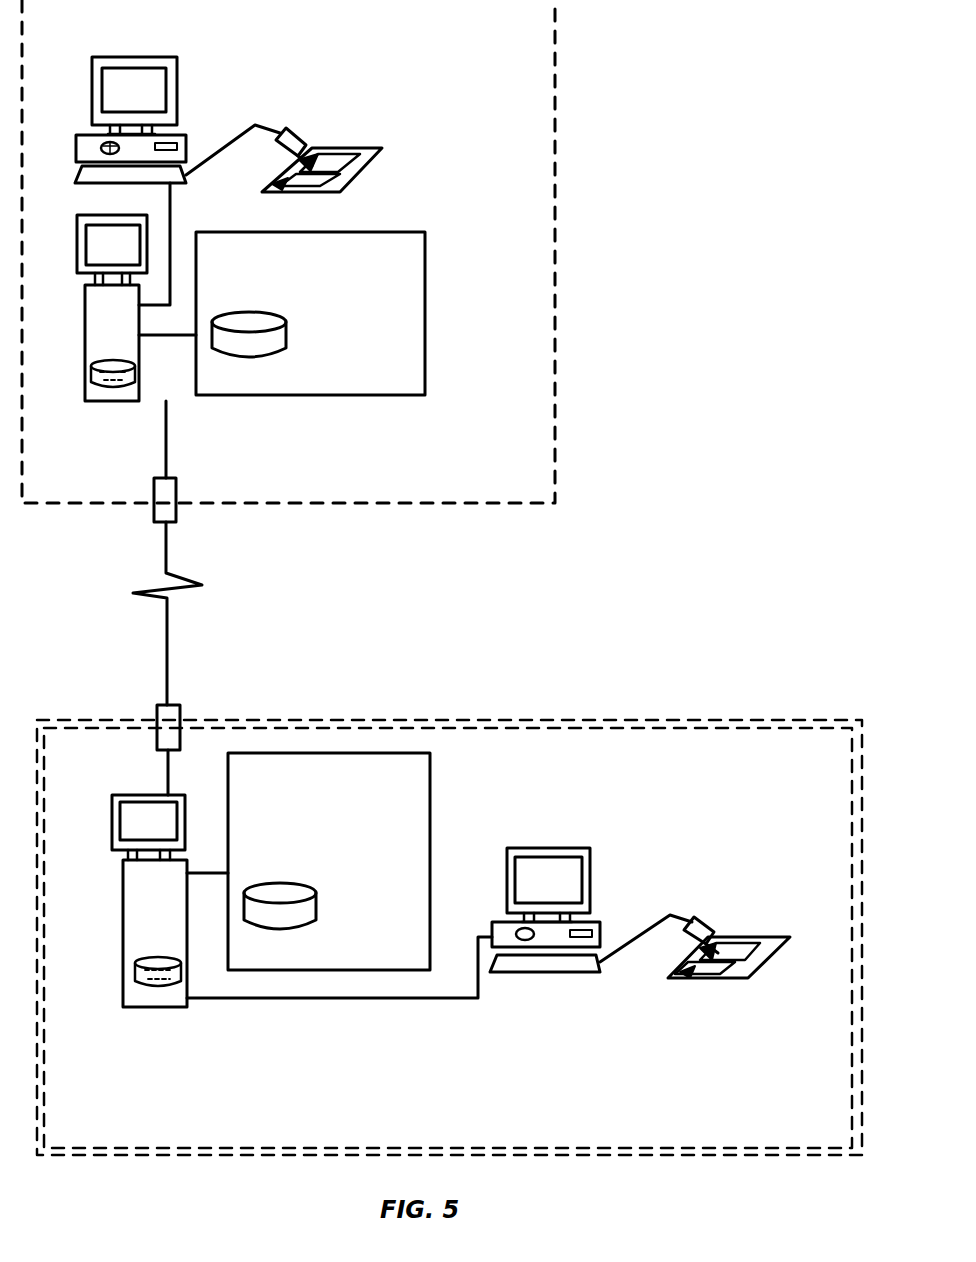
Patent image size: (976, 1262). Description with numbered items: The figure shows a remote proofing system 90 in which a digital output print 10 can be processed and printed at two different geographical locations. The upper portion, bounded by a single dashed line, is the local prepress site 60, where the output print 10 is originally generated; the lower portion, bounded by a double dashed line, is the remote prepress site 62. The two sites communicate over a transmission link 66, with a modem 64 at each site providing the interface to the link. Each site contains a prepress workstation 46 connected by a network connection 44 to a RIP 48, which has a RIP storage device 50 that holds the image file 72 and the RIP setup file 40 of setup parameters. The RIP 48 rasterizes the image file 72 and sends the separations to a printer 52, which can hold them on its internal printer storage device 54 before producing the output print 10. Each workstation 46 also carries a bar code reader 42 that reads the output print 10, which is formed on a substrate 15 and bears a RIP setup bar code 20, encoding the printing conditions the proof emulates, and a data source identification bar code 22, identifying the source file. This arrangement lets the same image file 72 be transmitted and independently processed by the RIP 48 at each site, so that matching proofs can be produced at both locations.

The output print 10 is at (365, 148).
The substrate 15 is at (372, 162).
The RIP setup bar code 20 is at (288, 186).
The data source identification bar code 22 is at (312, 150).
The RIP setup file 40 is at (96, 127).
The bar code reader 42 is at (290, 128).
The network connection 44 is at (173, 215).
The prepress workstation 46 is at (148, 57).
The Raster Image Processor (RIP) 48 is at (112, 404).
The RIP storage device 50 is at (114, 385).
The printer 52 is at (308, 395).
The printer storage device 54 is at (282, 352).
The local prepress site 60 is at (556, 182).
The remote prepress site 62 is at (580, 722).
The modem 64 is at (177, 512).
The transmission link 66 is at (166, 638).
The image file 72 is at (136, 375).
The remote proofing system 90 is at (660, 472).